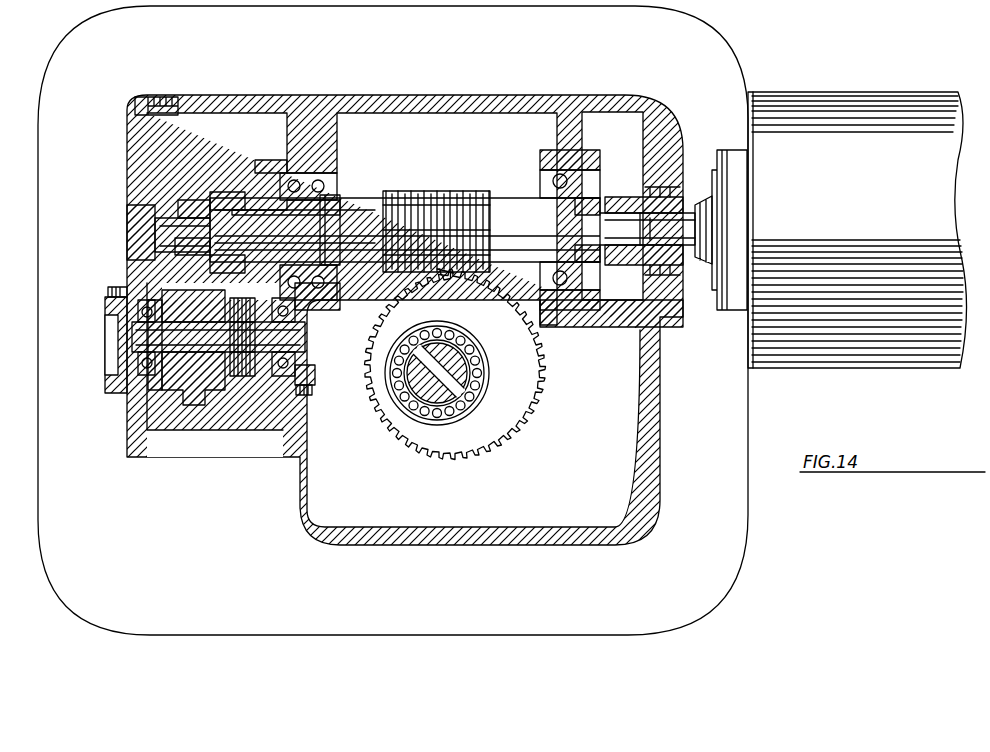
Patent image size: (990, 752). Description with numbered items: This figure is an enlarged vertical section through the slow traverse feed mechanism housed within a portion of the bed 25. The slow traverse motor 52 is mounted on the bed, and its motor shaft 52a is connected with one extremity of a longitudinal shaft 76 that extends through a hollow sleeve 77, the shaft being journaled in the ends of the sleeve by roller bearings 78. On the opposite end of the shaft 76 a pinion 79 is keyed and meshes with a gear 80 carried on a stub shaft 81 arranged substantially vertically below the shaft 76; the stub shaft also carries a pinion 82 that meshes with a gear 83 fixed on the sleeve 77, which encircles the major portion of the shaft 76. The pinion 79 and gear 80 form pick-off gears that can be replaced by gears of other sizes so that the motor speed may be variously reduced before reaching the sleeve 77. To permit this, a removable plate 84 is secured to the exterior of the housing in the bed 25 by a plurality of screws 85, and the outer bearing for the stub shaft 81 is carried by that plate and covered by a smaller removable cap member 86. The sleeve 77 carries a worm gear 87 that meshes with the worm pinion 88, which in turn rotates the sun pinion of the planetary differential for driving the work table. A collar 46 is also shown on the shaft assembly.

The bed 25 is at (428, 96).
The collar 46 is at (333, 210).
The slow traverse motor 52 is at (910, 360).
The motor shaft 52a is at (737, 305).
The shaft 76 is at (627, 200).
The hollow sleeve 77 is at (511, 213).
The roller bearings 78 is at (217, 200).
The pinion 79 is at (190, 202).
The gear 80 is at (200, 395).
The stub shaft 81 is at (148, 333).
The pinion 82 is at (244, 378).
The gear 83 is at (246, 170).
The removable plate 84 is at (130, 218).
The screws 85 is at (163, 97).
The removable cap member 86 is at (112, 360).
The worm gear 87 is at (414, 192).
The worm pinion 88 is at (525, 420).